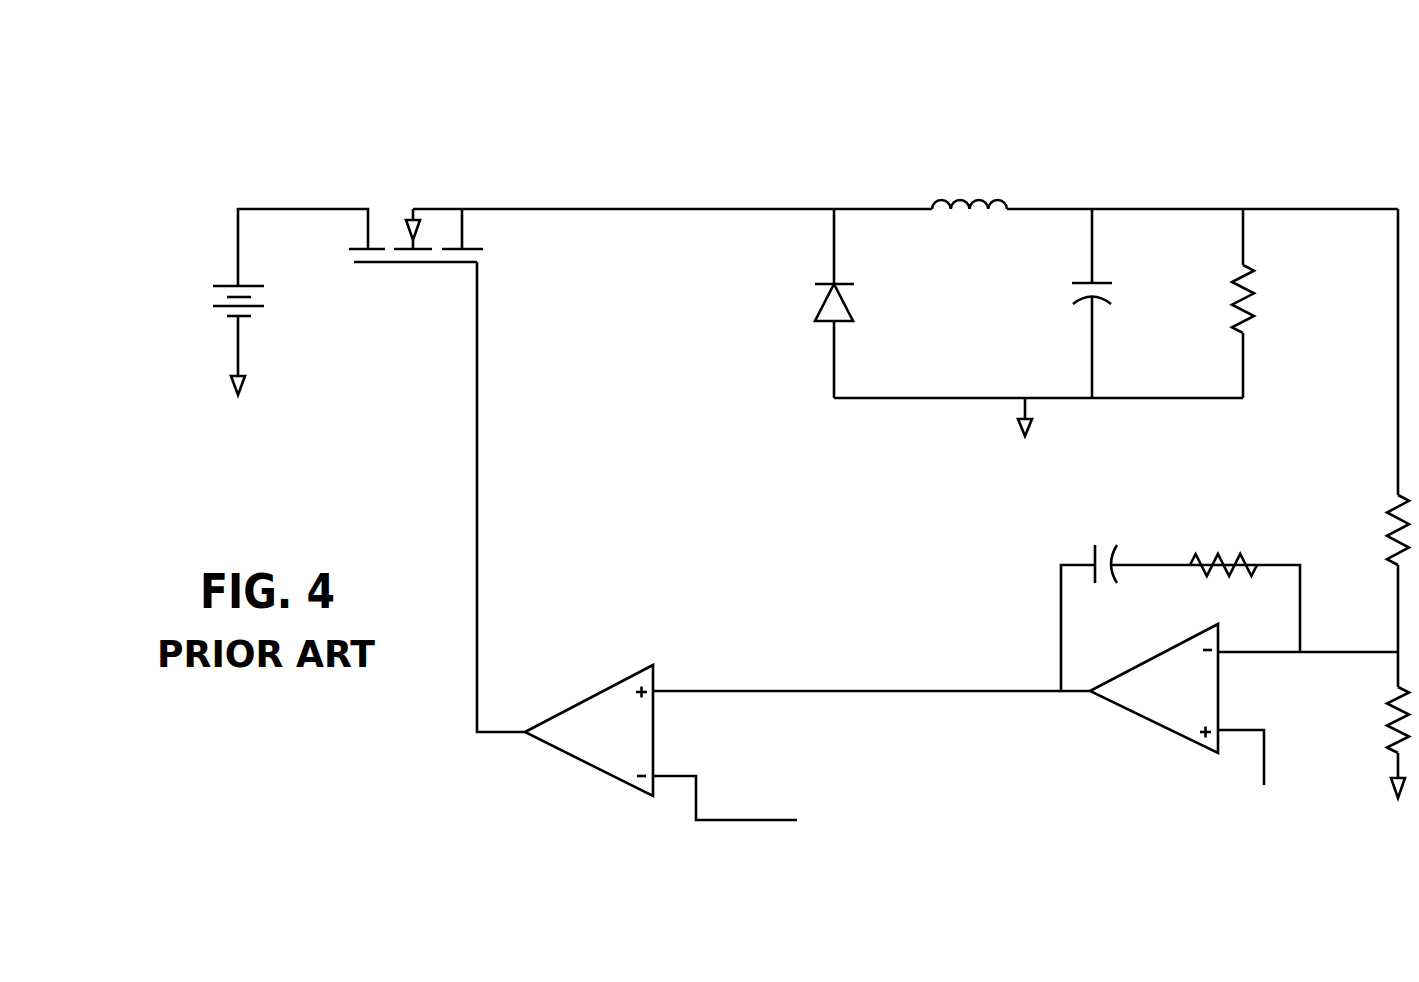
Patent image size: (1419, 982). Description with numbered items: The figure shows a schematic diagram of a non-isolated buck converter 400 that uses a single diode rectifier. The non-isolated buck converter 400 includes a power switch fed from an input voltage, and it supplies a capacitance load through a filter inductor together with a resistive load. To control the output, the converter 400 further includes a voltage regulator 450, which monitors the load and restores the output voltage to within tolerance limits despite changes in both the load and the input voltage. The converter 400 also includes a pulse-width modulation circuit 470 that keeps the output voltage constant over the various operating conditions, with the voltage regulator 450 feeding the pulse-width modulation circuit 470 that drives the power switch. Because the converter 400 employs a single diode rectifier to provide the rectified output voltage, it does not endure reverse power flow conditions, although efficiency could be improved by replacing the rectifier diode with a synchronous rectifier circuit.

The non-isolated buck converter 400 is at (600, 113).
The voltage regulator 450 is at (1025, 586).
The PWM circuit 470 is at (572, 753).